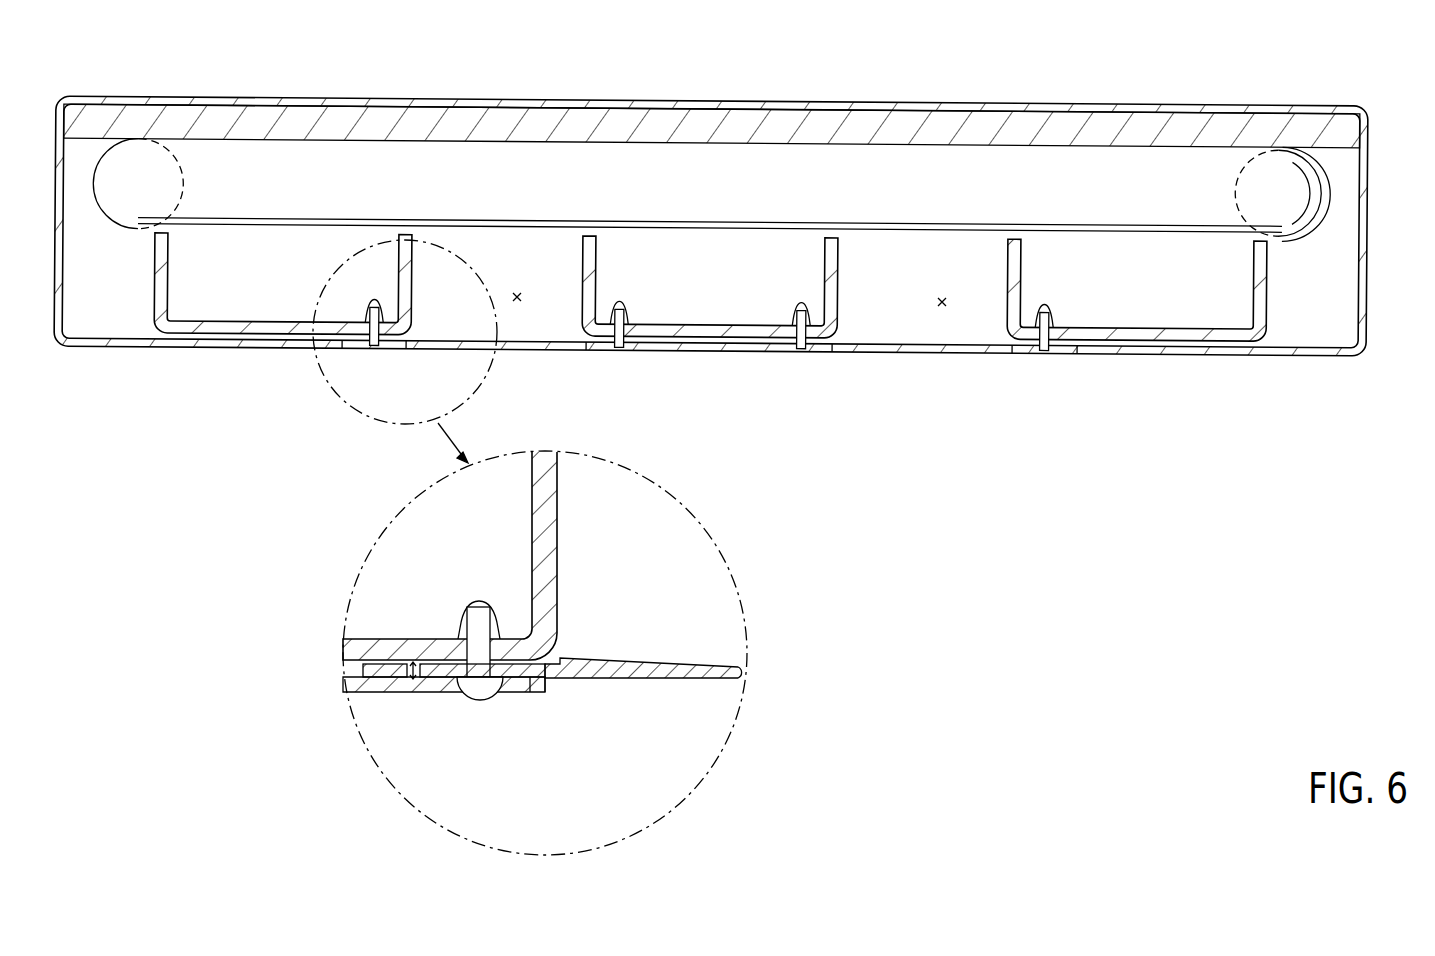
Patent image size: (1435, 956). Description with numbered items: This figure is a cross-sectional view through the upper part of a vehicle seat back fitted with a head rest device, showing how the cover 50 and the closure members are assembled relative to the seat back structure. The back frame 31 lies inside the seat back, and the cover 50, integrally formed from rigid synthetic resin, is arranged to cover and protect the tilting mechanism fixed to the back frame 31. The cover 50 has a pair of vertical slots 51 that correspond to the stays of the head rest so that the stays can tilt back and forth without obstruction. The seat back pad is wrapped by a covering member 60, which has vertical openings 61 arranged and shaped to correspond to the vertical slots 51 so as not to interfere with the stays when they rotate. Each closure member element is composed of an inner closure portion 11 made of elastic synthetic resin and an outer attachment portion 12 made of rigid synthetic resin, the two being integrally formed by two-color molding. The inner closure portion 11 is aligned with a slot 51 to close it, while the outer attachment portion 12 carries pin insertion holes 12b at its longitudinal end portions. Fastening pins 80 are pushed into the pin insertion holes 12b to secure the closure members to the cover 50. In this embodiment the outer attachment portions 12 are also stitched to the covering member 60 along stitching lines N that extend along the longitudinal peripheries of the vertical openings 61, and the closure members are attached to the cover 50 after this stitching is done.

The covering member 60 is at (160, 97).
The back frame 31 is at (267, 172).
The cover 50 is at (158, 290).
The vertical slots 51 is at (517, 300).
The stitching lines N is at (343, 345).
The pin insertion holes 12b is at (486, 652).
The fastening pins 80 is at (477, 690).
The outer attachment portion 12 is at (515, 676).
The inner closure portion 11 is at (663, 670).
The vertical openings 61 is at (547, 688).